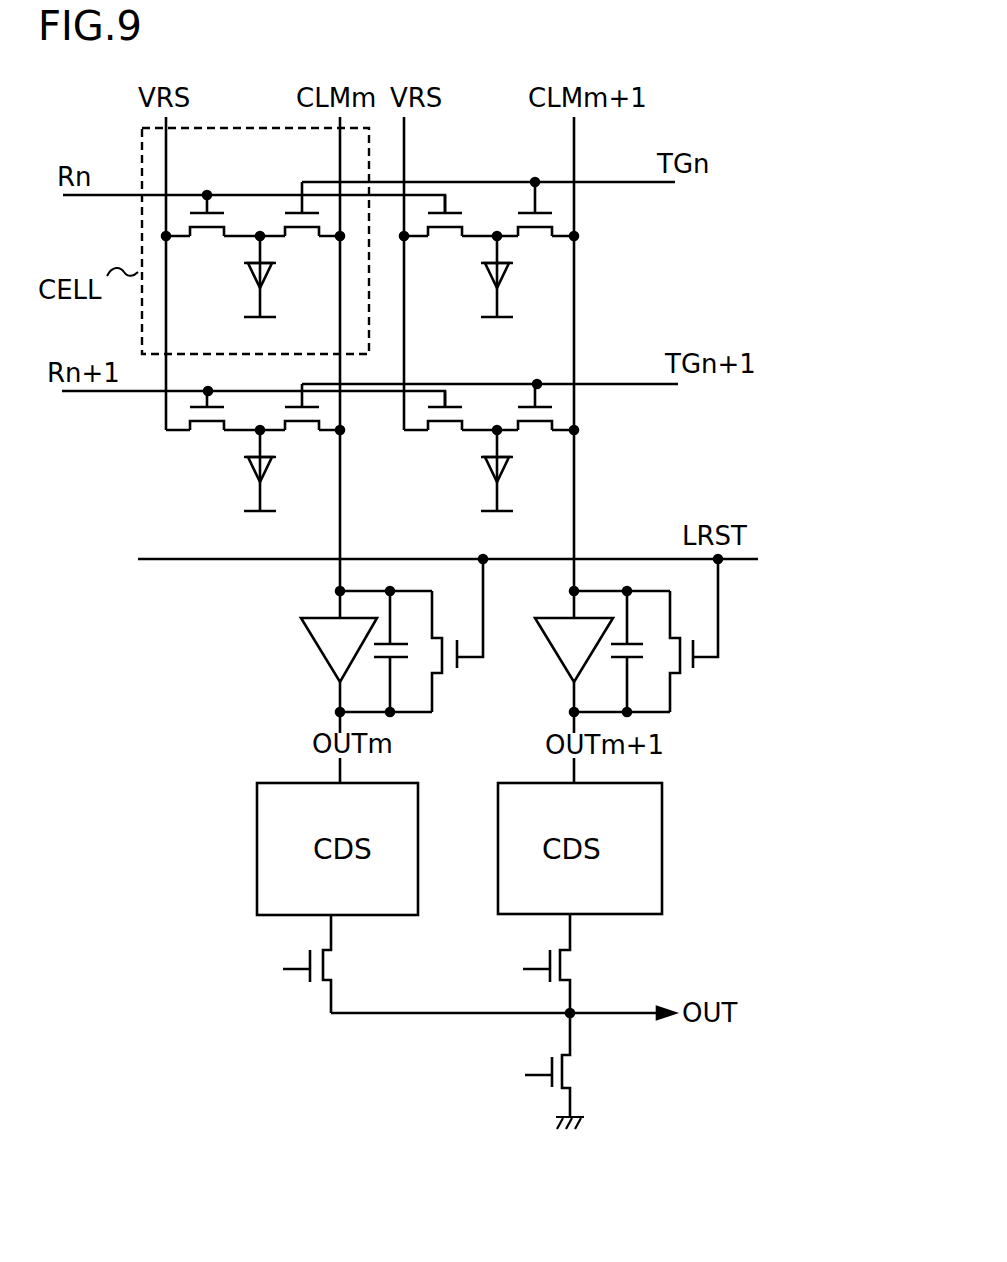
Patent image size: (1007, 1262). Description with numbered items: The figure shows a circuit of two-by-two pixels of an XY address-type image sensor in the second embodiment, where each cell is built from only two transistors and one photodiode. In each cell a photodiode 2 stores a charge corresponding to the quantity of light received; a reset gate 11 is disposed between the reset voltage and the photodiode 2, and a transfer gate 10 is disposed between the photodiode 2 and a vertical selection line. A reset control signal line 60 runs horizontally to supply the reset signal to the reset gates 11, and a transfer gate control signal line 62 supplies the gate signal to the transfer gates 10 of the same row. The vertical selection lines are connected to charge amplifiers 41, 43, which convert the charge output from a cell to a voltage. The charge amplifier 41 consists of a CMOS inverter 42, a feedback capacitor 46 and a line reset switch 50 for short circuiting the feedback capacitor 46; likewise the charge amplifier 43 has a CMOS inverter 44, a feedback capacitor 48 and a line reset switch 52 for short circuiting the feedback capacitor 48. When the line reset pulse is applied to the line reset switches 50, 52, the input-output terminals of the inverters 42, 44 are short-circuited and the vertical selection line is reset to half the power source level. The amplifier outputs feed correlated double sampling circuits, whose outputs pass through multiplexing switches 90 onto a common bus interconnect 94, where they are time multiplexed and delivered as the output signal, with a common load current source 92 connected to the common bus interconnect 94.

The reset control signal line 60 is at (90, 197).
The transfer gate control signal line 62 is at (633, 184).
The photodiode 2 is at (243, 275).
The reset gate 11 is at (210, 231).
The transfer gate 10 is at (305, 227).
The charge amplifier 41 is at (336, 671).
The CMOS inverter 42 is at (320, 657).
The feedback capacitor 46 is at (382, 651).
The line reset switch 50 is at (457, 635).
The charge amplifier 43 is at (644, 671).
The CMOS inverter 44 is at (552, 645).
The feedback capacitor 48 is at (615, 651).
The line reset switch 52 is at (694, 635).
The multiplexing switch 90 is at (449, 963).
The common bus interconnect 94 is at (427, 1015).
The common load current source 92 is at (575, 1076).